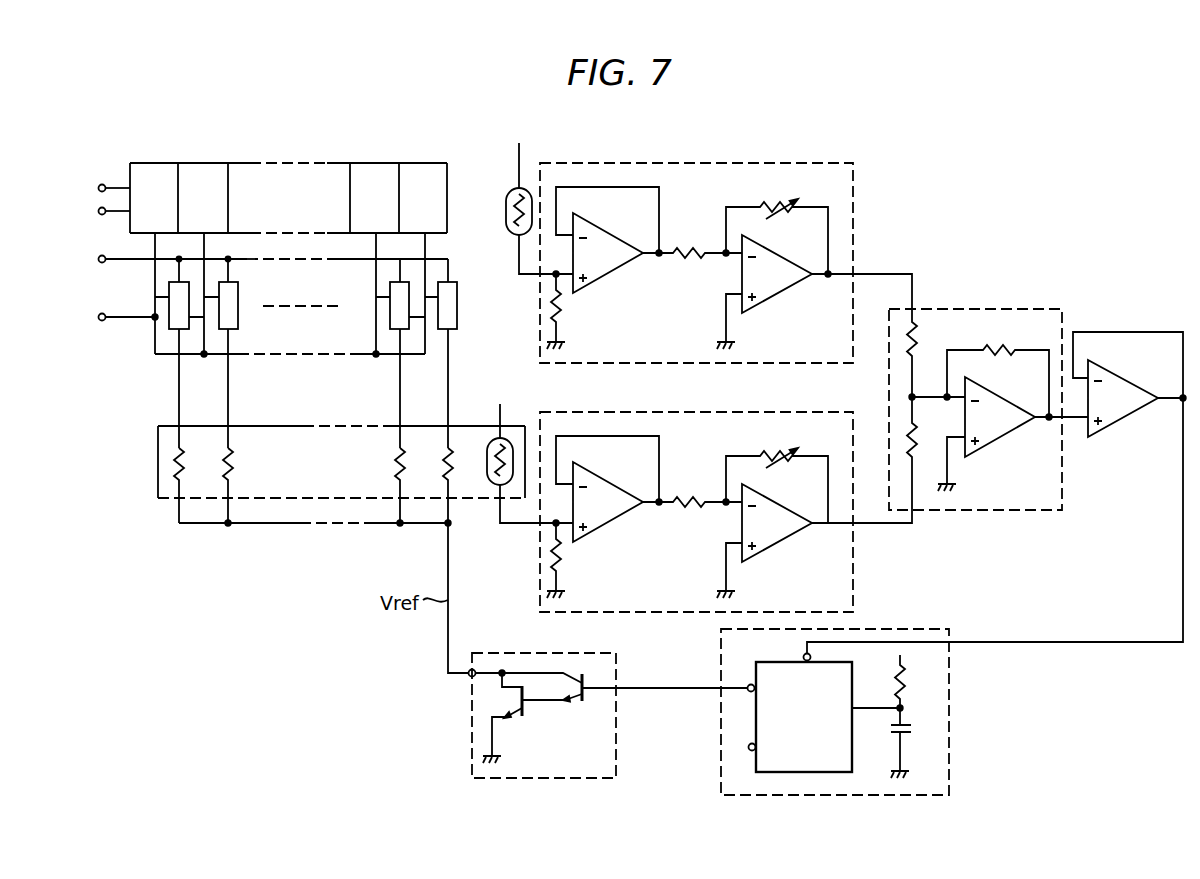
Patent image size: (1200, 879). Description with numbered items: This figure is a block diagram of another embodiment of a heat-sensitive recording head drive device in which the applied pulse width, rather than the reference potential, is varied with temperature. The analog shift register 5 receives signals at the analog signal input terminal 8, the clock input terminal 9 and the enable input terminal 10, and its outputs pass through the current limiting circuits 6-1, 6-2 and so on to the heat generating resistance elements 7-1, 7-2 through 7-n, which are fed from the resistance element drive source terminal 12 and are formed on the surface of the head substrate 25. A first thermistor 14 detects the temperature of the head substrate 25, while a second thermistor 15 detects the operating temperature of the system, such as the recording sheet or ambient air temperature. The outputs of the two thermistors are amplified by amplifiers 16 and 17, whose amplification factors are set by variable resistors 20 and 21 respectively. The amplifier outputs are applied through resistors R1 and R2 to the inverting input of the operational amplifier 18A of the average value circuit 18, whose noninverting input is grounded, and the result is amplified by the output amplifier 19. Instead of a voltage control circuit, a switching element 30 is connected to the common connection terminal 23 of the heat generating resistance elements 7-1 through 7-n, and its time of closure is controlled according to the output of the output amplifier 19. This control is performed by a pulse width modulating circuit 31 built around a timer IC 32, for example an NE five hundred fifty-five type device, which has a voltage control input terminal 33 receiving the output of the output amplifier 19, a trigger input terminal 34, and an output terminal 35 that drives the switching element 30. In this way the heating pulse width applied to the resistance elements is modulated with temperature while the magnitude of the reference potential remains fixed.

The analog shift register 5 is at (381, 176).
The current limiting circuit 6-1 is at (169, 305).
The current limiting circuit 6-2 is at (238, 296).
The heat generating resistance element 7-1 is at (198, 485).
The heat generating resistance element 7-2 is at (247, 485).
The heat generating resistance element 7-n is at (448, 455).
The analog signal input terminal 8 is at (106, 188).
The clock input terminal 9 is at (106, 211).
The enable input terminal 10 is at (117, 316).
The resistance element drive source terminal 12 is at (262, 260).
The first thermistor 14 is at (519, 454).
The second thermistor 15 is at (528, 199).
The amplifier 16 is at (696, 494).
The amplifier 17 is at (696, 243).
The average value circuit 18 is at (970, 397).
The operational amplifier 18A is at (985, 393).
The output amplifier 19 is at (1116, 379).
The variable resistor 20 is at (777, 476).
The variable resistor 21 is at (778, 229).
The common connection terminal 23 is at (469, 677).
The head substrate 25 is at (343, 441).
The switching element 30 is at (588, 715).
The pulse width modulating circuit 31 is at (860, 712).
The timer IC 32 is at (852, 755).
The voltage control input terminal 33 is at (805, 654).
The trigger input terminal 34 is at (740, 750).
The output terminal 35 is at (749, 685).
The resistor R1 is at (919, 353).
The resistor R2 is at (919, 450).